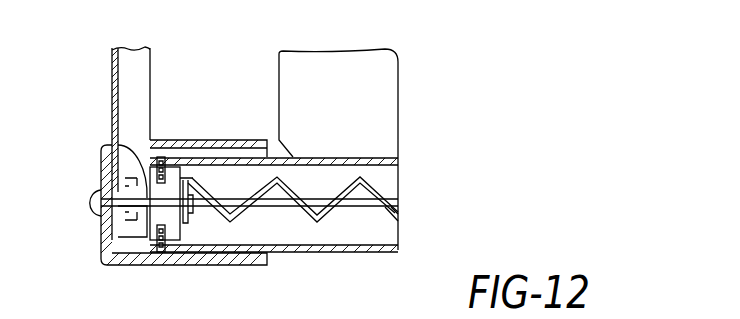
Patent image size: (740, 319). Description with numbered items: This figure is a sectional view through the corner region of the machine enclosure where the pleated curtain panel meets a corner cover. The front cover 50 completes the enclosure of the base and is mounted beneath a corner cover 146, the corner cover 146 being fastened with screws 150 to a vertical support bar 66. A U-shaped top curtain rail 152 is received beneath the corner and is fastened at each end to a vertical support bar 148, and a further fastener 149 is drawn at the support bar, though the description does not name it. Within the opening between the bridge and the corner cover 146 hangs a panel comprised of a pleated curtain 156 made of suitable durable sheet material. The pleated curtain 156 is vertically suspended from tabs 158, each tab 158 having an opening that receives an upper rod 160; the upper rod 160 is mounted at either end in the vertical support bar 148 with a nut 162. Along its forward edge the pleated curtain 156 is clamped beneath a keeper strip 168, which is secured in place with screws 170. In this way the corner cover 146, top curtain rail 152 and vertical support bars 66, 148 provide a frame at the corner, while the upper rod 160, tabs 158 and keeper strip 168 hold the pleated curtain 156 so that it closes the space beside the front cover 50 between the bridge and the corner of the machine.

The front cover 50 is at (113, 72).
The vertical support bar 66 is at (150, 64).
The corner cover 146 is at (97, 220).
The vertical support bar 148 is at (160, 228).
The fastener 149 is at (162, 155).
The screw 150 is at (100, 180).
The top curtain rail 152 is at (368, 157).
The pleated curtain 156 is at (290, 180).
The tab 158 is at (340, 207).
The upper rod 160 is at (368, 208).
The nut 162 is at (118, 141).
The keeper strip 168 is at (197, 180).
The screw 170 is at (212, 180).